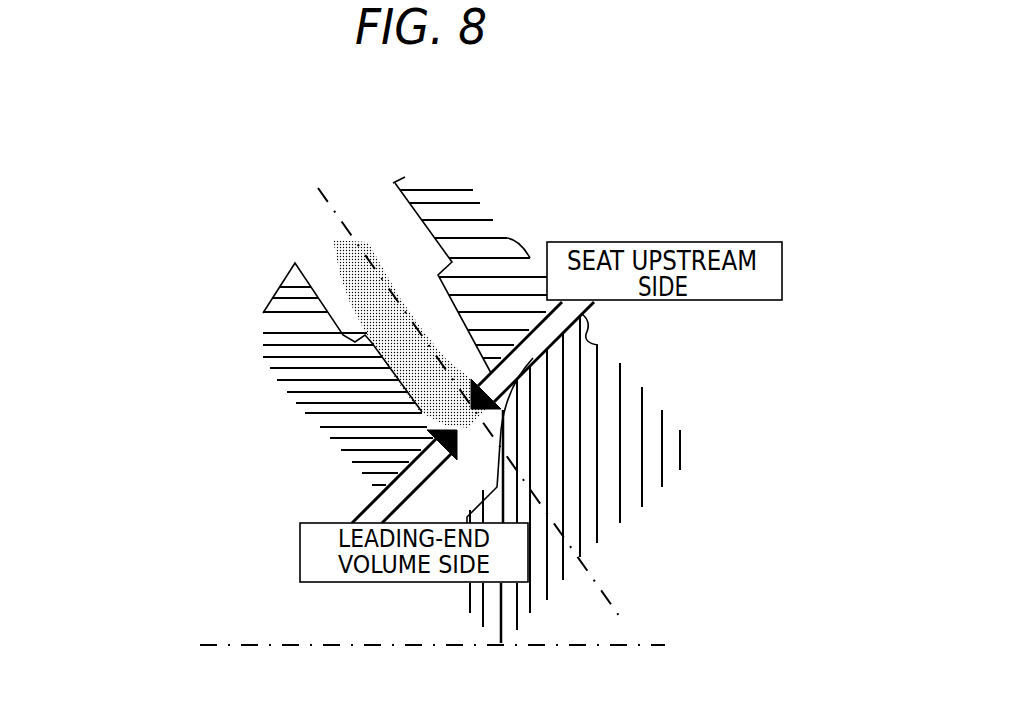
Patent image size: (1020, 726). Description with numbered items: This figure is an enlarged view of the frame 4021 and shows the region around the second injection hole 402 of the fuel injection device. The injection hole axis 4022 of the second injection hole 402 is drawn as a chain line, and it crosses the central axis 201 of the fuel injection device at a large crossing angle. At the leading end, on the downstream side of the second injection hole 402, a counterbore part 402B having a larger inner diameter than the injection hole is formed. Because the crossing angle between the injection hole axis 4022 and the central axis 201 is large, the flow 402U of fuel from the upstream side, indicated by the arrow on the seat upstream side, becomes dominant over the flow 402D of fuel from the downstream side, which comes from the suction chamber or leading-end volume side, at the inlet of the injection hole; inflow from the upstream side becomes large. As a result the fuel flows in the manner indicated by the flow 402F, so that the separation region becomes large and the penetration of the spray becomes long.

The frame 4021 is at (228, 96).
The injection hole axis 4022 is at (317, 190).
The second injection hole 402 is at (528, 257).
The counterbore part 402B is at (323, 292).
The flow of fuel 402F is at (357, 277).
The flow of fuel from the upstream side 402U is at (598, 345).
The flow of fuel from the downstream side 402D is at (392, 500).
The central axis 201 is at (340, 644).